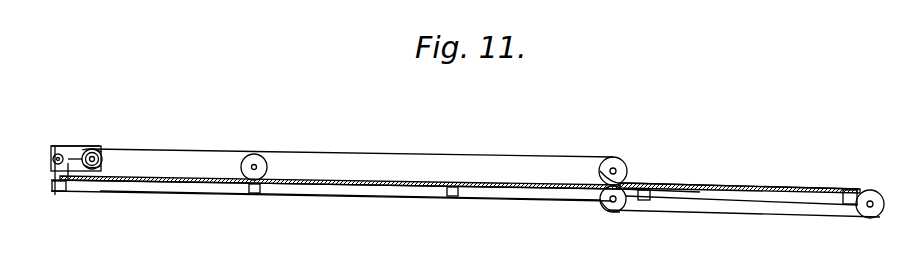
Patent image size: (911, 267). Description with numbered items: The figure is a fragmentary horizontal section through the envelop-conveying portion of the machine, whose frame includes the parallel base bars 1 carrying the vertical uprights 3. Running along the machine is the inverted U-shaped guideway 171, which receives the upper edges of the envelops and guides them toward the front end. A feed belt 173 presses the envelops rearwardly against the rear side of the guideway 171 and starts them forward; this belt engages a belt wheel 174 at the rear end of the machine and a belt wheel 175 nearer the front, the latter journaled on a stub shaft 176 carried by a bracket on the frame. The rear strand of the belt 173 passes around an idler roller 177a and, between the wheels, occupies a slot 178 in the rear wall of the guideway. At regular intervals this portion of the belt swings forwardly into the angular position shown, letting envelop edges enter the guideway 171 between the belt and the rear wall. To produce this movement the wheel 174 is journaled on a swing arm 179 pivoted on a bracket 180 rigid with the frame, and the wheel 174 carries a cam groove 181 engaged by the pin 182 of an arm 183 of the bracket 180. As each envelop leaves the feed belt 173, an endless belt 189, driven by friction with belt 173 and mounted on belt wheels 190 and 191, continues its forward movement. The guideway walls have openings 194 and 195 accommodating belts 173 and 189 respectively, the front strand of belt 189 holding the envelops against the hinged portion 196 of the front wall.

The base bars 1 is at (163, 190).
The vertical uprights 3 is at (55, 191).
The inverted U-shaped guideway 171 is at (373, 188).
The feed belt 173 is at (341, 152).
The belt wheel 174 is at (104, 161).
The belt wheel 175 is at (613, 157).
The stub shaft 176 is at (623, 178).
The idler roller 177a is at (254, 160).
The slot 178 is at (80, 171).
The swing arm 179 is at (66, 162).
The bracket 180 is at (52, 170).
The cam groove 181 is at (97, 151).
The pin 182 is at (91, 151).
The arm 183 is at (92, 143).
The endless belt 189 is at (716, 214).
The belt wheel 190 is at (617, 210).
The belt wheel 191 is at (873, 216).
The opening 194 is at (636, 185).
The opening 195 is at (617, 187).
The hinged portion 196 is at (737, 184).